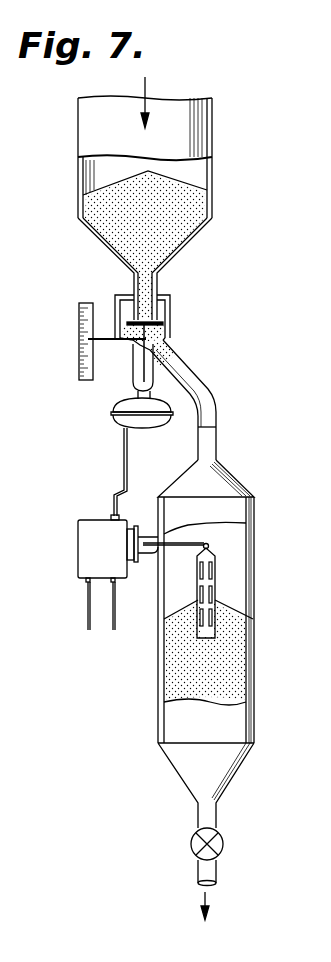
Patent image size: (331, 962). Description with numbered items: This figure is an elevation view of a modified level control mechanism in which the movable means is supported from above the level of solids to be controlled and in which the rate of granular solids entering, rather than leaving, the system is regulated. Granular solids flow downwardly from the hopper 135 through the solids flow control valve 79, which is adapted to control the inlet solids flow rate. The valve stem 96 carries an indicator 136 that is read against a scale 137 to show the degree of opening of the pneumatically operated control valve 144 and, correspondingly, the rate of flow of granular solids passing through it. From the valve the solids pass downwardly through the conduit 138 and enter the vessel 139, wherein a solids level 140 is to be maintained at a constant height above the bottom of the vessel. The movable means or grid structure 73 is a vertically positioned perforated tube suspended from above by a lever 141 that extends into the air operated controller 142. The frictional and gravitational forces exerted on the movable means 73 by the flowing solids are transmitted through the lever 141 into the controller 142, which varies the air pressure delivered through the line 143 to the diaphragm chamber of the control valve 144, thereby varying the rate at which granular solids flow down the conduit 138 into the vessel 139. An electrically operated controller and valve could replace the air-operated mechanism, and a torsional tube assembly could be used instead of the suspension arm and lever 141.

The movable means or grid structure 73 is at (216, 636).
The solids flow control valve 79 is at (170, 313).
The valve stem 96 is at (161, 338).
The hopper 135 is at (212, 184).
The indicator 136 is at (110, 341).
The scale 137 is at (79, 322).
The conduit 138 is at (206, 408).
The vessel 139 is at (255, 580).
The solids level 140 is at (234, 613).
The lever 141 is at (184, 534).
The air operated controller 142 is at (79, 523).
The line 143 is at (124, 467).
The pneumatically operated control valve 144 is at (150, 419).